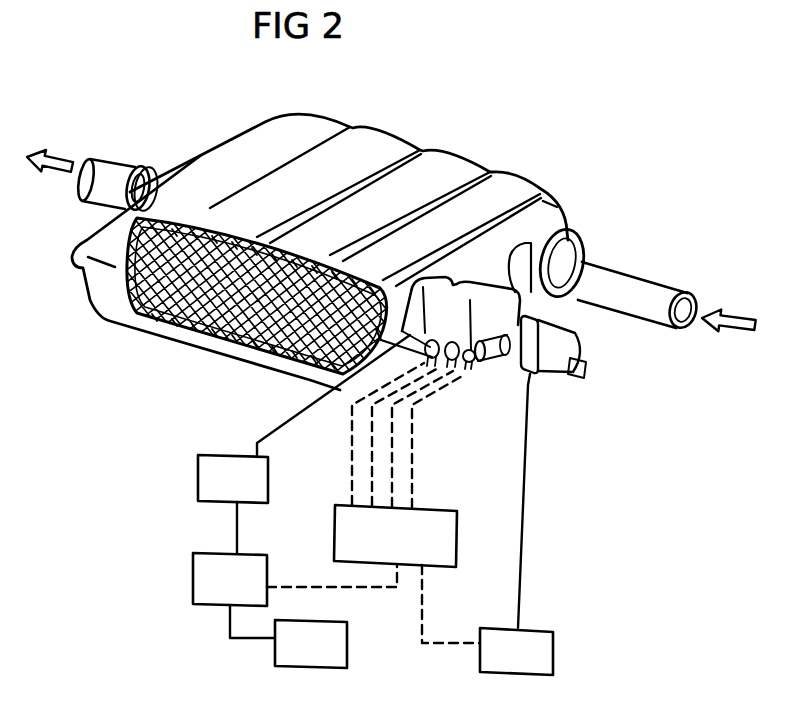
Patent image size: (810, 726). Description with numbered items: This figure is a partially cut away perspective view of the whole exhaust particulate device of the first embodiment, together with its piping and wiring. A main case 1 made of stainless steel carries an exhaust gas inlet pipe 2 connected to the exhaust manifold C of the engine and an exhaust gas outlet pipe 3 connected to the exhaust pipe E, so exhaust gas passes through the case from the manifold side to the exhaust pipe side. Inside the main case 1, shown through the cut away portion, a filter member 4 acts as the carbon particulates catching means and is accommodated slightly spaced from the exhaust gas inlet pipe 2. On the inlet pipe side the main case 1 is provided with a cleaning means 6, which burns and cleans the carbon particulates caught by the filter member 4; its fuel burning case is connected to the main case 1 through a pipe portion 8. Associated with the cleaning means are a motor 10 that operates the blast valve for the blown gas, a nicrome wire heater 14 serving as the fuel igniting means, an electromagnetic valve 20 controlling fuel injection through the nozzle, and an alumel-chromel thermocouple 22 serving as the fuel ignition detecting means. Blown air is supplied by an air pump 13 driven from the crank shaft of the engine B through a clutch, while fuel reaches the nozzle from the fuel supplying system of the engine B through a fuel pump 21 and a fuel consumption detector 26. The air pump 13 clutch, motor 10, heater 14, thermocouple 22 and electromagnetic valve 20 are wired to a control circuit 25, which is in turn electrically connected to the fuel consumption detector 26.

The main case 1 is at (103, 321).
The exhaust gas inlet pipe 2 is at (572, 229).
The exhaust gas outlet pipe 3 is at (152, 178).
The filter member 4 is at (174, 326).
The cleaning means 6 is at (540, 308).
The pipe portion 8 is at (310, 377).
The motor 10 is at (493, 362).
The air pump 13 is at (553, 652).
The nicrome wire heater 14 is at (455, 365).
The electromagnetic valve 20 is at (424, 368).
The fuel pump 21 is at (198, 482).
The alumel-chromel thermocouple 22 is at (440, 368).
The control circuit 25 is at (457, 516).
The fuel consumption detector 26 is at (193, 580).
The engine B is at (308, 670).
The exhaust manifold C is at (578, 272).
The exhaust pipe E is at (118, 165).